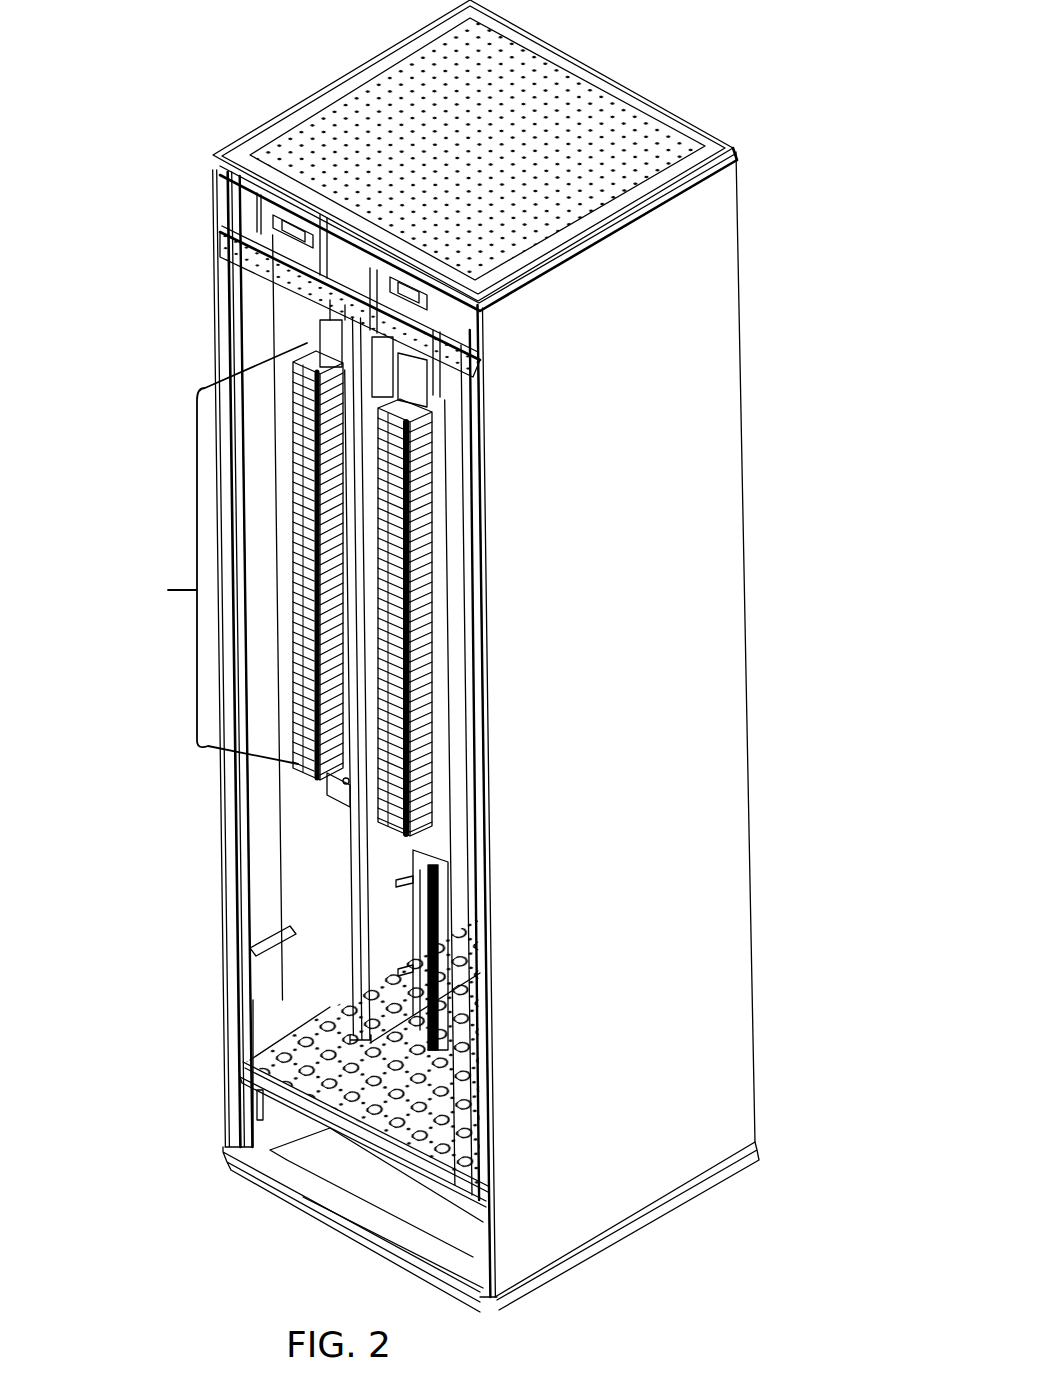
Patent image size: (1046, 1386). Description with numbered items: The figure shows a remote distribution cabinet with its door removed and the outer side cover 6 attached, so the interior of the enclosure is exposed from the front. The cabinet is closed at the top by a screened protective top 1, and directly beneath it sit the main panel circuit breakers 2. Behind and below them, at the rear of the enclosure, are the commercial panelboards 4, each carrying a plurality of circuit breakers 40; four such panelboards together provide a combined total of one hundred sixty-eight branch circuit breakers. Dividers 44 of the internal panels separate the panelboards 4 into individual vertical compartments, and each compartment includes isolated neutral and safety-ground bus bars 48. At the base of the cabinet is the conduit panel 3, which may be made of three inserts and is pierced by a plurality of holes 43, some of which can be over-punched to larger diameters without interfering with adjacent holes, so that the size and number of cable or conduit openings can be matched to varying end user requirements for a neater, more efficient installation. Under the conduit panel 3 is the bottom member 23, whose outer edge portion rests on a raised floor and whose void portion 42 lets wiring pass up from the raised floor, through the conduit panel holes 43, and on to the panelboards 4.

The screened protective top 1 is at (673, 150).
The main panel circuit breakers 2 is at (262, 218).
The conduit panel 3 is at (262, 1084).
The commercial panelboards 4 is at (244, 553).
The outer side cover 6 is at (720, 578).
The bottom member 23 is at (313, 1188).
The circuit breakers 40 is at (440, 427).
The void portion 42 is at (400, 1207).
The conduit panel holes 43 is at (245, 1068).
The dividers 44 is at (353, 818).
The isolated neutral and safety-ground bus bars 48 is at (437, 923).